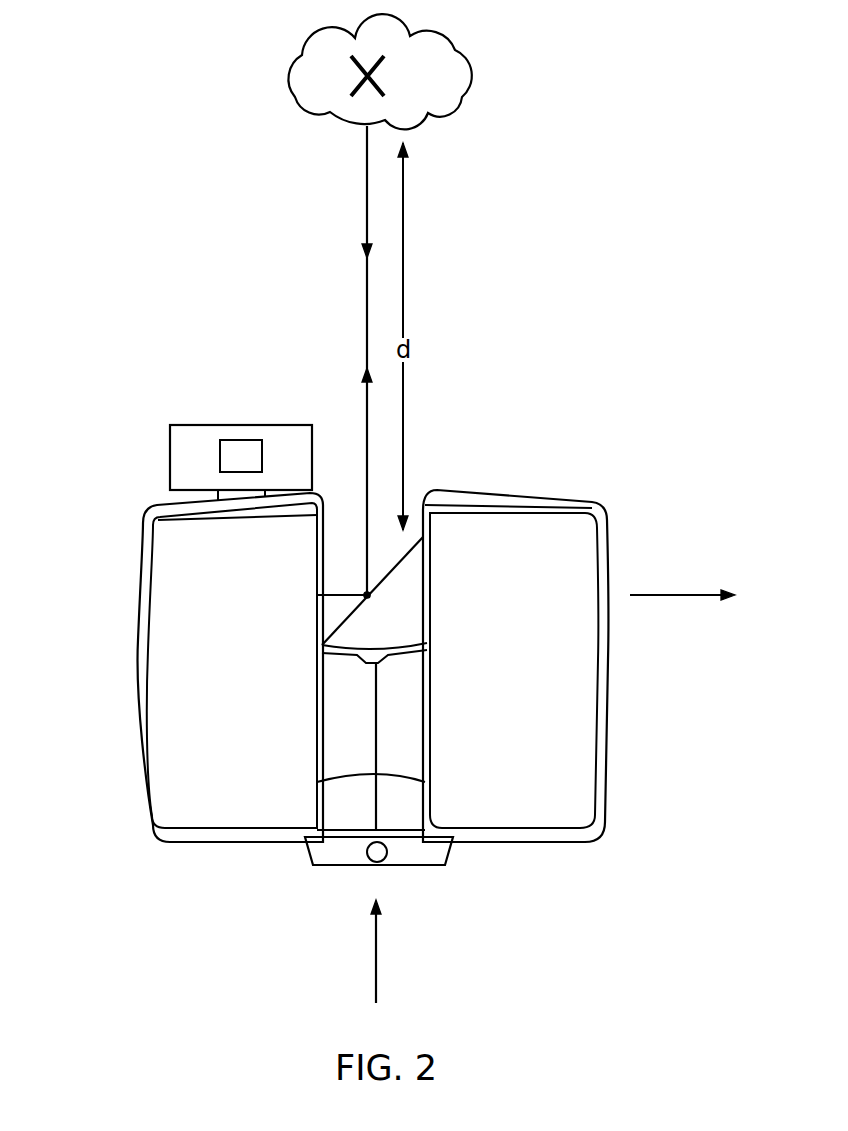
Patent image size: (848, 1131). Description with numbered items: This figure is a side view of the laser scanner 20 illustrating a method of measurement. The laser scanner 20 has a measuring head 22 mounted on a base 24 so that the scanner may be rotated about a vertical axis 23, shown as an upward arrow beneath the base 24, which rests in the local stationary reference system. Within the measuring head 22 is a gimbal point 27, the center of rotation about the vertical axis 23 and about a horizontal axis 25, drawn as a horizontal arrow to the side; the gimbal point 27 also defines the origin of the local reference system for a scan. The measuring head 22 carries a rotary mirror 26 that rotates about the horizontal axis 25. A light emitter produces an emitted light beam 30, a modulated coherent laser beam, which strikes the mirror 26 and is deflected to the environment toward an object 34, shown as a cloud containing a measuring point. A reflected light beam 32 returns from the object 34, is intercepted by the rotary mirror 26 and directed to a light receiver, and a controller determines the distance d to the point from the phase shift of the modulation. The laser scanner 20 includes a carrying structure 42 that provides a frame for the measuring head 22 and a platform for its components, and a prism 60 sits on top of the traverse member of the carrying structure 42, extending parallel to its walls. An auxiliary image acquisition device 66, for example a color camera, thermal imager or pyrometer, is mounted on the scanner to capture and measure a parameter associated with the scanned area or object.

The laser scanner 20 is at (206, 173).
The measuring head 22 is at (595, 432).
The vertical axis 23 is at (378, 977).
The base 24 is at (305, 857).
The horizontal axis 25 is at (665, 593).
The rotary mirror 26 is at (347, 620).
The gimbal point 27 is at (372, 592).
The emitted light beam 30 is at (364, 401).
The reflected light beam 32 is at (365, 230).
The object 34 is at (450, 36).
The carrying structure 42 is at (475, 898).
The prism 60 is at (380, 667).
The auxiliary image acquisition device 66 is at (195, 385).